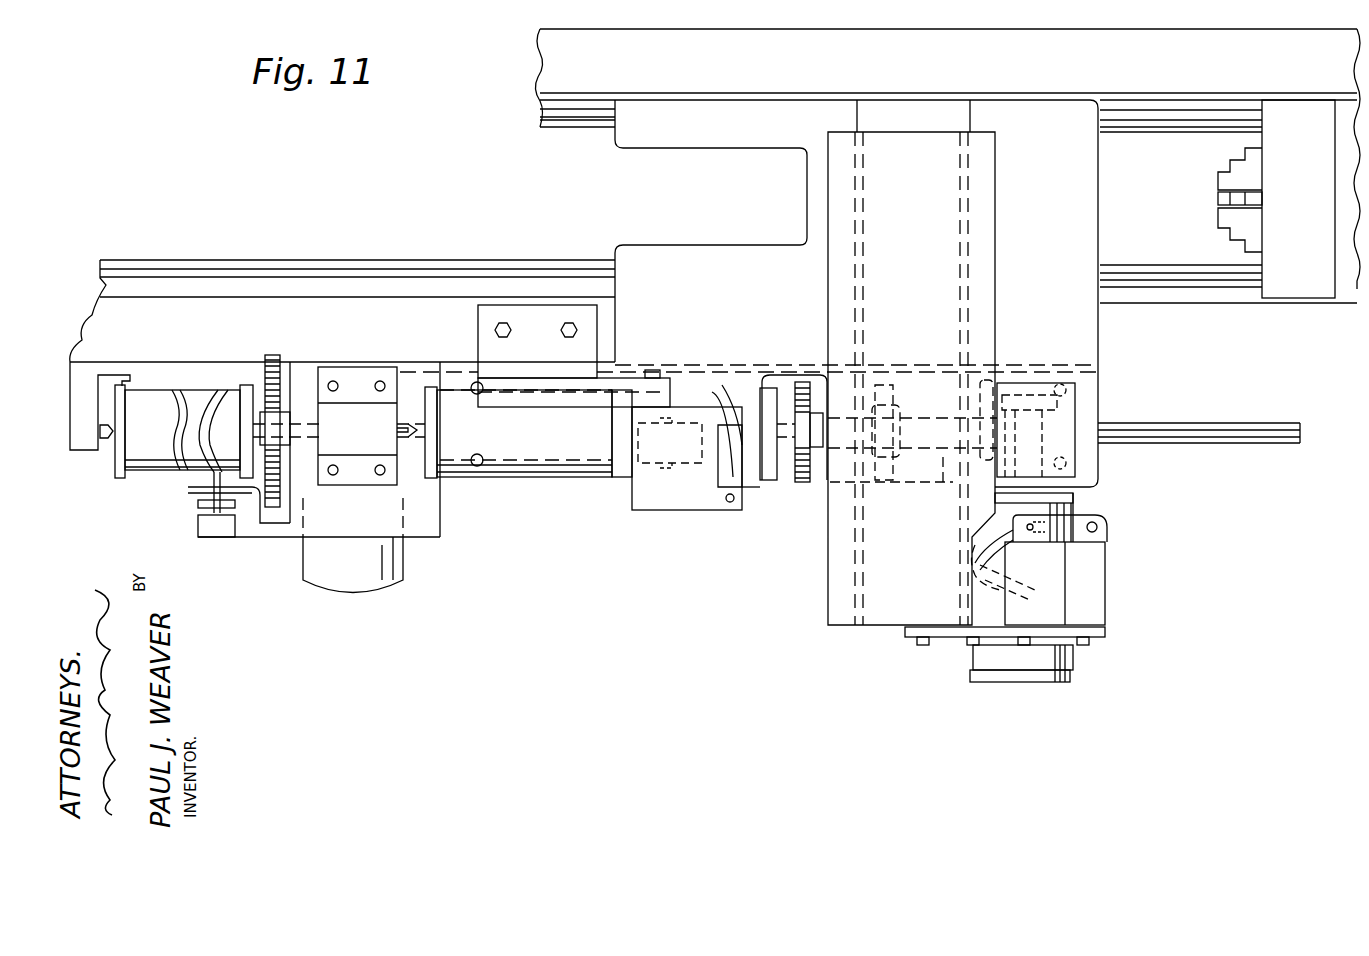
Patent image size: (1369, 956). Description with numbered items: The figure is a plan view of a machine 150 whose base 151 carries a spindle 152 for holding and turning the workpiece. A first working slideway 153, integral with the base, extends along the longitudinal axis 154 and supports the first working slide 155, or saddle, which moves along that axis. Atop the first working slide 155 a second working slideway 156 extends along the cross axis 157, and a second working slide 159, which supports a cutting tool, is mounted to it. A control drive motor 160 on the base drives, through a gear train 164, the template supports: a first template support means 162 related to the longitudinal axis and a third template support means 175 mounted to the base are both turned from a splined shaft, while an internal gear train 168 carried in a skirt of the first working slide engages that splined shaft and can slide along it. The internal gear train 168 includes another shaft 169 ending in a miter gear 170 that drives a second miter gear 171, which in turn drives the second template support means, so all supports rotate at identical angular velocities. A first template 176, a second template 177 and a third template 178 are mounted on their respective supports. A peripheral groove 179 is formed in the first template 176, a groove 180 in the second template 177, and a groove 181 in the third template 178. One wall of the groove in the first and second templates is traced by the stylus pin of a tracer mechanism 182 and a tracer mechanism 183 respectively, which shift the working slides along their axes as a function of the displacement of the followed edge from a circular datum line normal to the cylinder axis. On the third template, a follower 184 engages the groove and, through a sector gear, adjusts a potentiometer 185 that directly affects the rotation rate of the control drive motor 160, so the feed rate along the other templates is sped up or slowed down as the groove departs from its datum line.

The machine 150 is at (502, 139).
The base 151 is at (178, 260).
The spindle 152 is at (1218, 178).
The first working slideway 153 is at (375, 297).
The longitudinal axis 154 is at (615, 202).
The first working slide 155 is at (730, 245).
The second working slideway 156 is at (857, 118).
The cross axis 157 is at (766, 215).
The second working slide 159 is at (828, 602).
The control drive motor 160 is at (403, 562).
The first template support means 162 is at (780, 500).
The gear train 164 is at (278, 380).
The internal gear train 168 is at (933, 332).
The shaft 169 is at (950, 500).
The miter gear 170 is at (985, 362).
The second miter gear 171 is at (1065, 412).
The third template support means 175 is at (110, 440).
The first template 176 is at (760, 490).
The second template 177 is at (1070, 662).
The third template 178 is at (163, 478).
The peripheral groove 179 is at (712, 392).
The groove 180 is at (980, 558).
The groove 181 is at (212, 392).
The tracer mechanism 182 is at (652, 478).
The tracer mechanism 183 is at (1060, 578).
The follower 184 is at (200, 497).
The potentiometer 185 is at (220, 533).